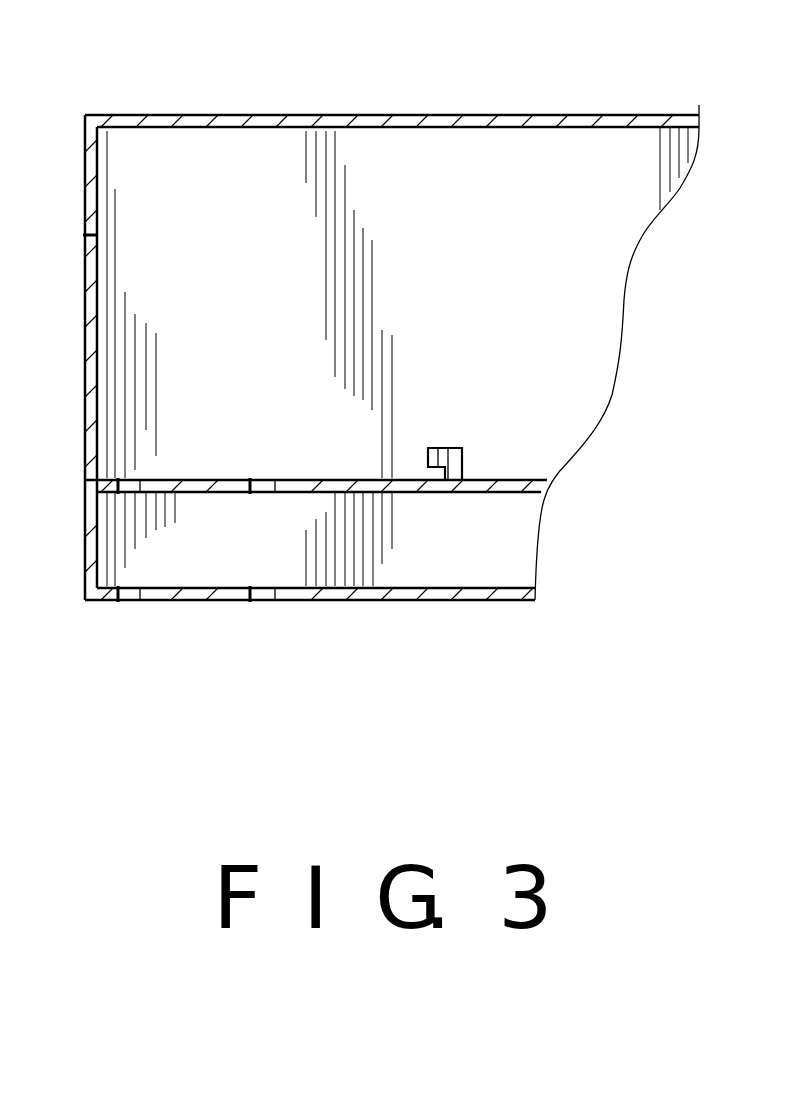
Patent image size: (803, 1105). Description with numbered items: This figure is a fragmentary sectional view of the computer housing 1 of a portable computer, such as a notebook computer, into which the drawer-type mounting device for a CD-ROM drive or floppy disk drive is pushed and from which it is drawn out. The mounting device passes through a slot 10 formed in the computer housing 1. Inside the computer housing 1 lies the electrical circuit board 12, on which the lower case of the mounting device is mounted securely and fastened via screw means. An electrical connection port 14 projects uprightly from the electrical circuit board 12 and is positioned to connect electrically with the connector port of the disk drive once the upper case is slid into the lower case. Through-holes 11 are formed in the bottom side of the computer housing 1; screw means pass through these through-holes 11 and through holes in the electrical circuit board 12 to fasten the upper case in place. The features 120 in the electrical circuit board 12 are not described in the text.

The computer housing 1 is at (380, 103).
The slot 10 is at (90, 332).
The through-holes 11 is at (130, 602).
The electrical circuit board 12 is at (483, 483).
The slots in partition plate 120 is at (131, 479).
The electrical connection port 14 is at (453, 447).